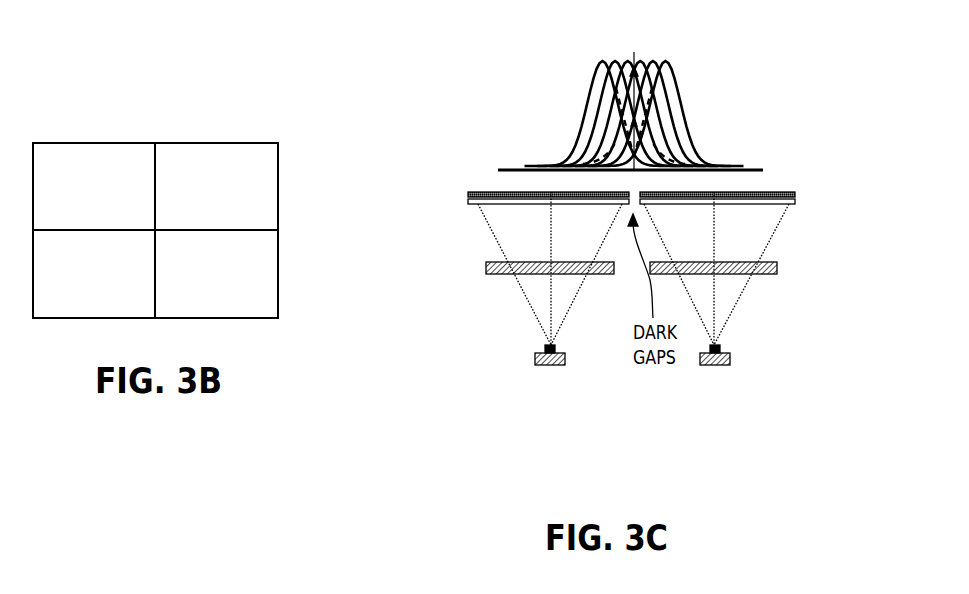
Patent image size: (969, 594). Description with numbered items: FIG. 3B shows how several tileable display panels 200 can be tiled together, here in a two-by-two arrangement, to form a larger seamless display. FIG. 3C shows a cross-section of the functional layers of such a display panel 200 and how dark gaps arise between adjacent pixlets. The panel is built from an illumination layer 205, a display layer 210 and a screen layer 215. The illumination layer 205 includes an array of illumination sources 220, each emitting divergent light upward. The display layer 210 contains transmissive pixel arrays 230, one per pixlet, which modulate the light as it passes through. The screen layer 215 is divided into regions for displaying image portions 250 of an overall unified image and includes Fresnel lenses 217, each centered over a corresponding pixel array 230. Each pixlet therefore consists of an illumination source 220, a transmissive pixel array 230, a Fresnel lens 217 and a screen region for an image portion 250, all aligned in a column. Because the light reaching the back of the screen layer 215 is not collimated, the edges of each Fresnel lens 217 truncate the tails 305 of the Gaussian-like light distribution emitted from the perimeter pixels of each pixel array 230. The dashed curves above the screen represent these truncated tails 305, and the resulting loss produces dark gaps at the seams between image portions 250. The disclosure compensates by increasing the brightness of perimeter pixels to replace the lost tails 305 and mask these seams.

In FIG. 3B, the tileable display panel 200 is at (107, 196).
In FIG. 3C, the illumination layer 205 is at (593, 395).
In FIG. 3C, the display layer 210 is at (619, 259).
In FIG. 3C, the screen layer 215 is at (619, 171).
In FIG. 3C, the Fresnel lens 217 is at (795, 201).
In FIG. 3C, the illumination source 220 is at (553, 365).
In FIG. 3C, the transmissive pixel array 230 is at (777, 266).
In FIG. 3C, the image portion 250 is at (490, 192).
In FIG. 3C, the light tails 305 is at (650, 130).